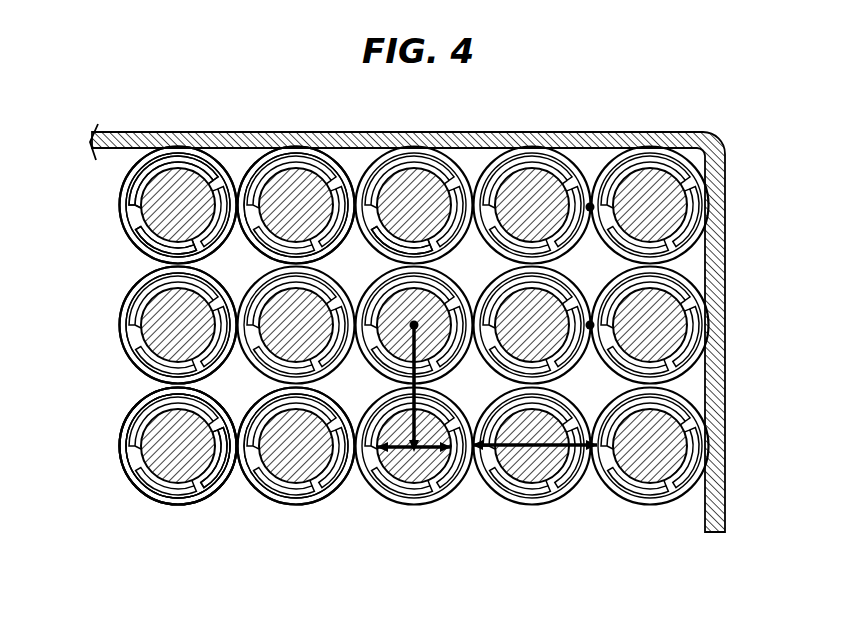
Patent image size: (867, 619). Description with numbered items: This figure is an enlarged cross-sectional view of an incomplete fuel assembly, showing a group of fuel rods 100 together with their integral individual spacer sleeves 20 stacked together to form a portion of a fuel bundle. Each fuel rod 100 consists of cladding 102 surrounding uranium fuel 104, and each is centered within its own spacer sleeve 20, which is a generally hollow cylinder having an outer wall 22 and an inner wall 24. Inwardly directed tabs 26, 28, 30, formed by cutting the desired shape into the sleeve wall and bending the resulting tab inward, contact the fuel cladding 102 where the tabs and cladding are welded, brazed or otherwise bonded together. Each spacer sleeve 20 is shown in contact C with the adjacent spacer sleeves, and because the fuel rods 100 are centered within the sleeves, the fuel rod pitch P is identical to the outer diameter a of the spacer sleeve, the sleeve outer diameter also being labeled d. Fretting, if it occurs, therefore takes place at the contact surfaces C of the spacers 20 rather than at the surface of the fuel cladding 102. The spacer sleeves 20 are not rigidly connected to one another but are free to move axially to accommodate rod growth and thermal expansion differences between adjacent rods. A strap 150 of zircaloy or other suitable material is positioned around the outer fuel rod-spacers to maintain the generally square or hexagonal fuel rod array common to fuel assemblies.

The spacer sleeve 20 is at (104, 450).
The outer wall 22 is at (142, 500).
The inner wall 24 is at (207, 488).
The inwardly directed tab 26 is at (233, 237).
The inwardly directed tab 28 is at (121, 198).
The inwardly directed tab 30 is at (152, 252).
The fuel rod 100 is at (126, 238).
The cladding 102 is at (130, 355).
The uranium fuel 104 is at (382, 235).
The strap 150 is at (622, 132).
The contact C is at (590, 216).
The fuel rod pitch P is at (436, 394).
The outer diameter d is at (397, 487).
The outer diameter of the spacer sleeve a is at (557, 460).